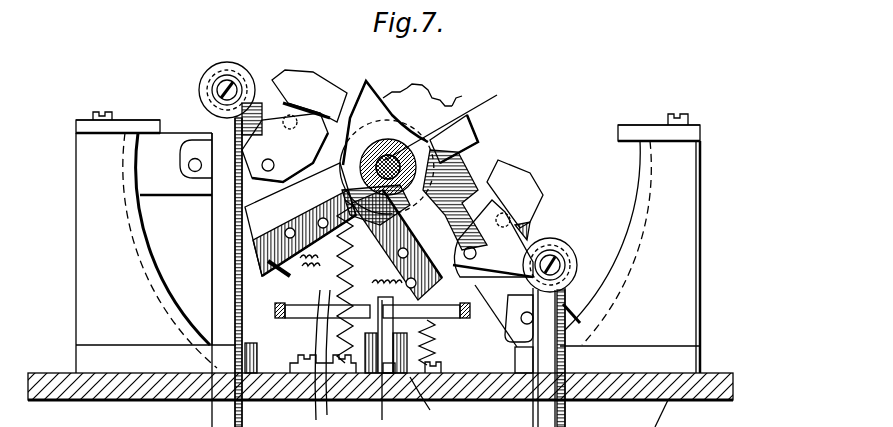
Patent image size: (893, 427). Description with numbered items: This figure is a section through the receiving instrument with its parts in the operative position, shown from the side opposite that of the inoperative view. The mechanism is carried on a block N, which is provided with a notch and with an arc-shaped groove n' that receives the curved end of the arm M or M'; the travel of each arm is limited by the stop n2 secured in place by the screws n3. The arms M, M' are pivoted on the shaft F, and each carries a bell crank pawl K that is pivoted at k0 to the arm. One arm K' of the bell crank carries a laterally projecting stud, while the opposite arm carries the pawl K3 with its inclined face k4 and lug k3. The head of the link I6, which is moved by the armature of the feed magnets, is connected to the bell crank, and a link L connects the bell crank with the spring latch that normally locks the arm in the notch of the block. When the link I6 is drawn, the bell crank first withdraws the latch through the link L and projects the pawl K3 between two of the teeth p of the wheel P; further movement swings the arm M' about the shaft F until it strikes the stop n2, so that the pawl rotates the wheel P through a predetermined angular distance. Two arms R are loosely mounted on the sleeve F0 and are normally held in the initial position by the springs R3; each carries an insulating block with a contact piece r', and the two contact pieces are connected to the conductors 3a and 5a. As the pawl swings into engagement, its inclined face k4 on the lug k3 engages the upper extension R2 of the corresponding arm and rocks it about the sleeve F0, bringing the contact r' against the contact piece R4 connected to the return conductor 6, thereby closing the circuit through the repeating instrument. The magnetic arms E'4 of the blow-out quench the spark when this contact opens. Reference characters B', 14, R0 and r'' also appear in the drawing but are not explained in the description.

The base plate B' is at (380, 376).
The base support 14 is at (365, 413).
The block N is at (713, 236).
The screws n3 is at (93, 110).
The stop n2 is at (120, 127).
The arm M is at (174, 239).
The arc-shaped groove n' is at (387, 250).
The arm M' is at (601, 235).
The link I6 is at (211, 238).
The link L is at (213, 140).
The shaft F is at (437, 123).
The sleeve F0 is at (447, 125).
The arm R is at (339, 178).
The rocker link R0 is at (350, 233).
The upper extension R2 is at (350, 93).
The wheel P is at (450, 177).
The teeth p is at (427, 98).
The arm of the bell crank K' is at (387, 199).
The pawl K3 is at (323, 83).
The lug k3 is at (343, 97).
The inclined face k4 is at (347, 67).
The pivot k0 is at (290, 127).
The bell crank pawl K is at (512, 238).
The magnetic arms E'4 is at (357, 335).
The springs R3 is at (347, 273).
The contact piece r' is at (288, 279).
The coil spring r'' is at (377, 292).
The conductor 3a is at (304, 358).
The conductor 5a is at (342, 358).
The return conductor 6 is at (389, 363).
The contact piece R4 is at (418, 395).